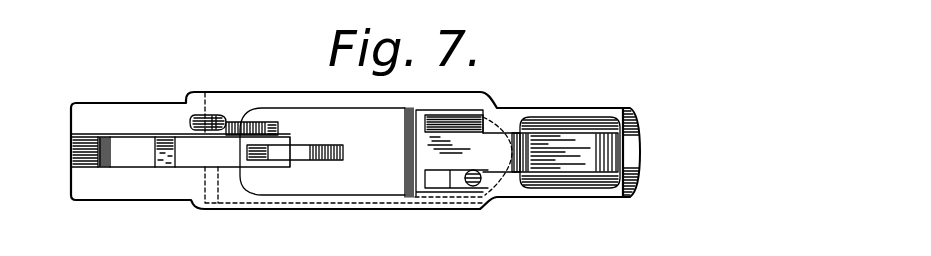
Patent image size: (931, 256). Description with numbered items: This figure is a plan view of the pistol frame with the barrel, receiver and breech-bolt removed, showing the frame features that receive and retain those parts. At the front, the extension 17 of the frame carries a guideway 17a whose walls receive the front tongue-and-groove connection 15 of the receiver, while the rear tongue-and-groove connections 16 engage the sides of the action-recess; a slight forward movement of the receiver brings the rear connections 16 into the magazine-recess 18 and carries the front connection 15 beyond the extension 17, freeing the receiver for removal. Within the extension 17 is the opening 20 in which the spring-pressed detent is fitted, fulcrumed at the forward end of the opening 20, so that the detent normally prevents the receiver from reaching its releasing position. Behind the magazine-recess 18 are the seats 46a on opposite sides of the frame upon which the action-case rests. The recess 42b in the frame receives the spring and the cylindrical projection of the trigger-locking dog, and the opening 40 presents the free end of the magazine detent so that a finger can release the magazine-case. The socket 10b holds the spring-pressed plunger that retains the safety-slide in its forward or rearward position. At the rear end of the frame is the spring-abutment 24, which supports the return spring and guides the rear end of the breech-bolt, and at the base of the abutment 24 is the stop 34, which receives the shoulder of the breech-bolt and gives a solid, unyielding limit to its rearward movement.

The tongue-and-groove connection 15 is at (105, 157).
The tongue-and-groove connection 16 is at (450, 116).
The extension 17 is at (85, 187).
The guideway 17a is at (101, 157).
The magazine-recess 18 is at (326, 152).
The opening 20 is at (133, 146).
The spring-abutment 24 is at (634, 152).
The stop 34 is at (616, 150).
The opening 40 is at (300, 156).
The recess 42b is at (218, 115).
The seats 46a is at (482, 138).
The socket 10b is at (479, 184).